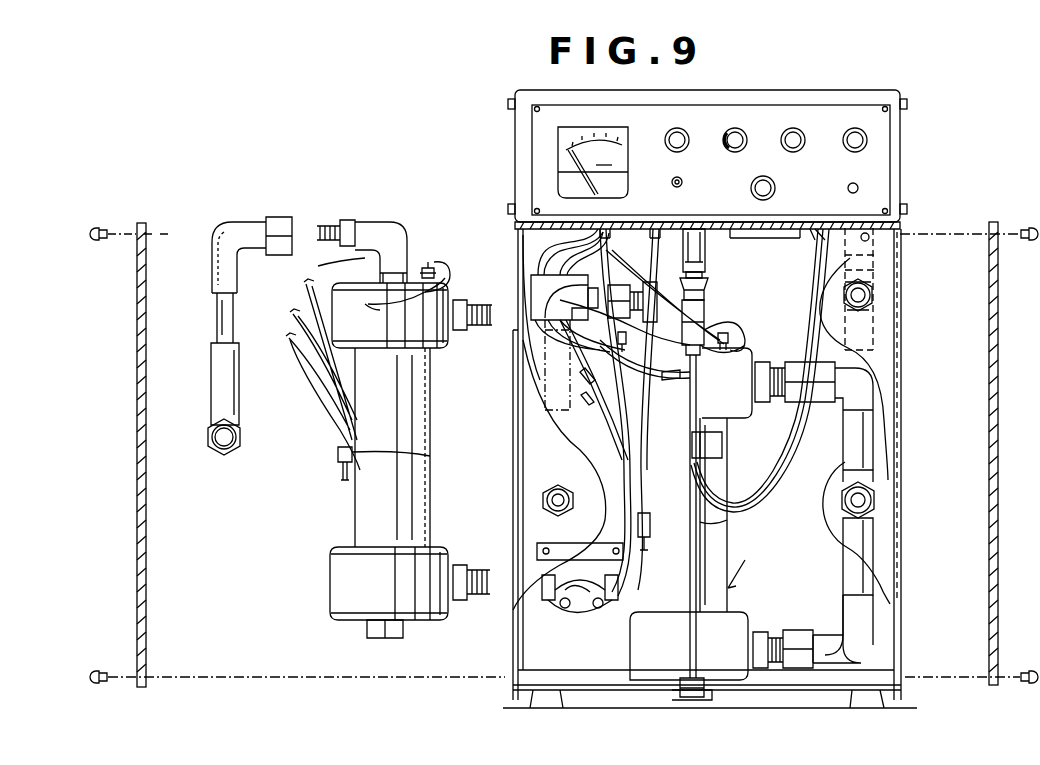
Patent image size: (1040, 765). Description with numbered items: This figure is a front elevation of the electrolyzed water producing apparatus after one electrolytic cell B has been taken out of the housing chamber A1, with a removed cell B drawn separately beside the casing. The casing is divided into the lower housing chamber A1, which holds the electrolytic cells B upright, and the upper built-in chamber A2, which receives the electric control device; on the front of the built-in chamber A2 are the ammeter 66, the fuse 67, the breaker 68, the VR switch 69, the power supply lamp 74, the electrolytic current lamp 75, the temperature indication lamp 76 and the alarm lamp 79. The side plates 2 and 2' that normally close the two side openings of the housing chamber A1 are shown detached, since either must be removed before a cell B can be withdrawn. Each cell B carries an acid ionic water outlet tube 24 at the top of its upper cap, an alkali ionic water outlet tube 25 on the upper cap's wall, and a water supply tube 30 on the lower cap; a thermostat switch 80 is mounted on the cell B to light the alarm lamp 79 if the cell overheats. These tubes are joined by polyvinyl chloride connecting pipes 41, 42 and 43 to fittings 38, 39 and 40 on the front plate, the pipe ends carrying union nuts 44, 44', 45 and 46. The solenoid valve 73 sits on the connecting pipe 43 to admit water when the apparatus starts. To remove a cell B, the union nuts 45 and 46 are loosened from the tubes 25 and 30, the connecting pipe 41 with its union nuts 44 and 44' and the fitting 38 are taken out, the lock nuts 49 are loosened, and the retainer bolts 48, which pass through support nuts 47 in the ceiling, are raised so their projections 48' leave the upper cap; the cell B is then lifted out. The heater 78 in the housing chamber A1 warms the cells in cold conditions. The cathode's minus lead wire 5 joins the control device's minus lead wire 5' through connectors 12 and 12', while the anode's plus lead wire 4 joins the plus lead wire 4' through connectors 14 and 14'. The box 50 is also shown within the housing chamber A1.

The side plate 2 is at (297, 455).
The side plate 2' is at (969, 453).
The plus lead wire 4 is at (442, 262).
The plus lead wire 4' is at (612, 375).
The minus lead wire 5 is at (325, 405).
The minus lead wire 5' is at (555, 342).
The connector 12 is at (381, 296).
The connector 12' is at (648, 371).
The connector 14 is at (313, 359).
The connector 14' is at (594, 390).
The acid ionic water outlet tube 24 is at (383, 222).
The alkali ionic water outlet tube 25 is at (486, 330).
The water supply tube 30 is at (480, 600).
The fitting 38 is at (545, 505).
The fitting 39 is at (873, 500).
The fitting 40 is at (872, 295).
The connecting pipe 41 is at (234, 320).
The connecting pipe 42 is at (845, 405).
The connecting pipe 43 is at (878, 636).
The union nut 44 is at (258, 235).
The union nut 44' is at (213, 457).
The union nut 45 is at (795, 365).
The union nut 46 is at (800, 630).
The support nut 47 is at (706, 258).
The retainer bolt 48 is at (717, 499).
The projection 48' is at (722, 362).
The lock nut 49 is at (708, 295).
The box 50 is at (696, 652).
The ammeter 66 is at (626, 162).
The fuse 67 is at (850, 192).
The breaker 68 is at (682, 184).
The VR switch 69 is at (775, 185).
The solenoid valve 73 is at (880, 256).
The power supply lamp 74 is at (849, 134).
The electrolytic current lamp 75 is at (728, 134).
The temperature indication lamp 76 is at (786, 134).
The heater 78 is at (590, 608).
The alarm lamp 79 is at (670, 134).
The thermostat switch 80 is at (337, 458).
The housing chamber A1 is at (534, 638).
The built-in chamber A2 is at (880, 112).
The electrolytic cell B is at (350, 520).